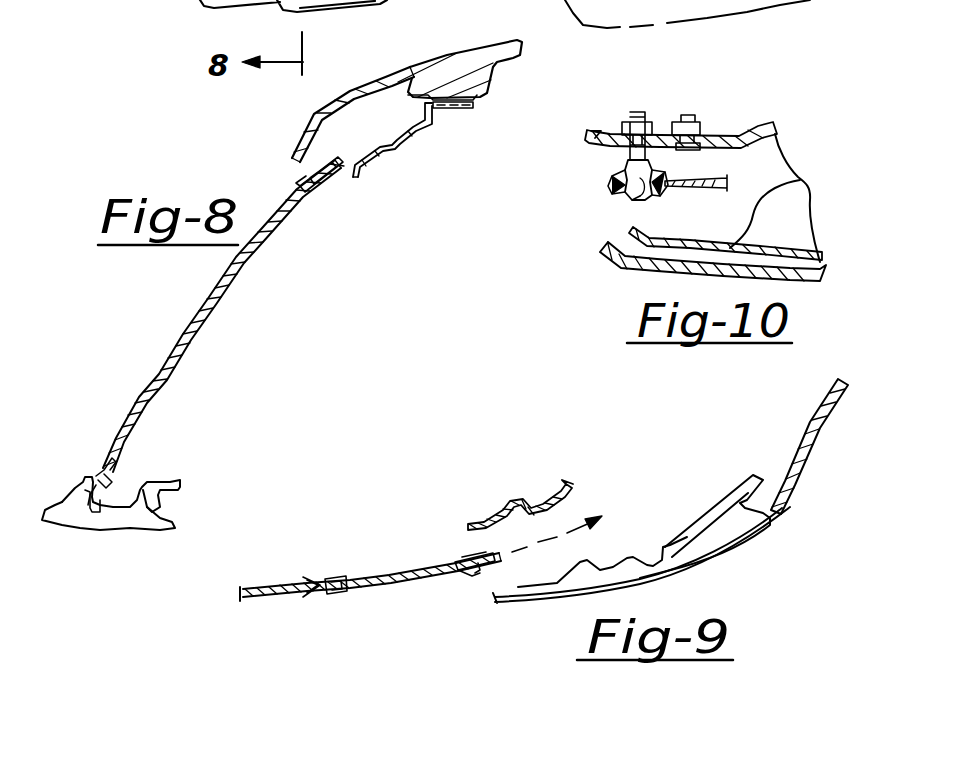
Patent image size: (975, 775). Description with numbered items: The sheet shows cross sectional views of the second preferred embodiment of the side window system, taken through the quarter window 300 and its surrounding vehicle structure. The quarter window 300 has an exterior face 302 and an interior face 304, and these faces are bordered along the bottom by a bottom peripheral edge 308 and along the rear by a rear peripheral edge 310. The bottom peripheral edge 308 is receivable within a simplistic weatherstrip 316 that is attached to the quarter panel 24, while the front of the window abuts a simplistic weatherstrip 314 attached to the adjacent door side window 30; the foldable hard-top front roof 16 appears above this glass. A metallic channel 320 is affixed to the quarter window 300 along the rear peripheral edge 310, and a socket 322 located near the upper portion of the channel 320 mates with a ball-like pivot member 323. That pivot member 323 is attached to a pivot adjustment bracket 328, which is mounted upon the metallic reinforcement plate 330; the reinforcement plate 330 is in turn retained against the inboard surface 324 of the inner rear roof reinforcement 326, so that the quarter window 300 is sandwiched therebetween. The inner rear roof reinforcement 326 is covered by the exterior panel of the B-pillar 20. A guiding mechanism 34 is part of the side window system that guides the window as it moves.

In FIG. 8, the foldable hard-top front roof 16 is at (384, 70).
In FIG. 9, the B-pillar 20 is at (727, 543).
In FIG. 8, the quarter panel 24 is at (73, 480).
In FIG. 9, the door side window 30 is at (258, 597).
In FIG. 10, the guiding mechanism 34 is at (633, 260).
In FIG. 8, the quarter window 300 is at (247, 265).
In FIG. 9, the quarter window 300 is at (370, 593).
In FIG. 8, the exterior face 302 is at (203, 303).
In FIG. 9, the exterior face 302 is at (413, 588).
In FIG. 8, the interior face 304 is at (178, 363).
In FIG. 9, the interior face 304 is at (395, 574).
In FIG. 8, the bottom peripheral edge 308 is at (88, 505).
In FIG. 9, the rear peripheral edge 310 is at (472, 580).
In FIG. 9, the weatherstrip 314 is at (331, 580).
In FIG. 8, the weatherstrip 316 is at (97, 482).
In FIG. 8, the metallic channel 320 is at (413, 96).
In FIG. 10, the metallic channel 320 is at (696, 183).
In FIG. 9, the metallic channel 320 is at (457, 561).
In FIG. 10, the socket 322 is at (615, 188).
In FIG. 10, the ball-like pivot member 323 is at (638, 205).
In FIG. 10, the inboard surface 324 is at (800, 180).
In FIG. 10, the inner rear roof reinforcement 326 is at (770, 248).
In FIG. 10, the pivot adjustment bracket 328 is at (710, 127).
In FIG. 8, the reinforcement plate 330 is at (396, 143).
In FIG. 10, the reinforcement plate 330 is at (738, 133).
In FIG. 9, the reinforcement plate 330 is at (538, 503).